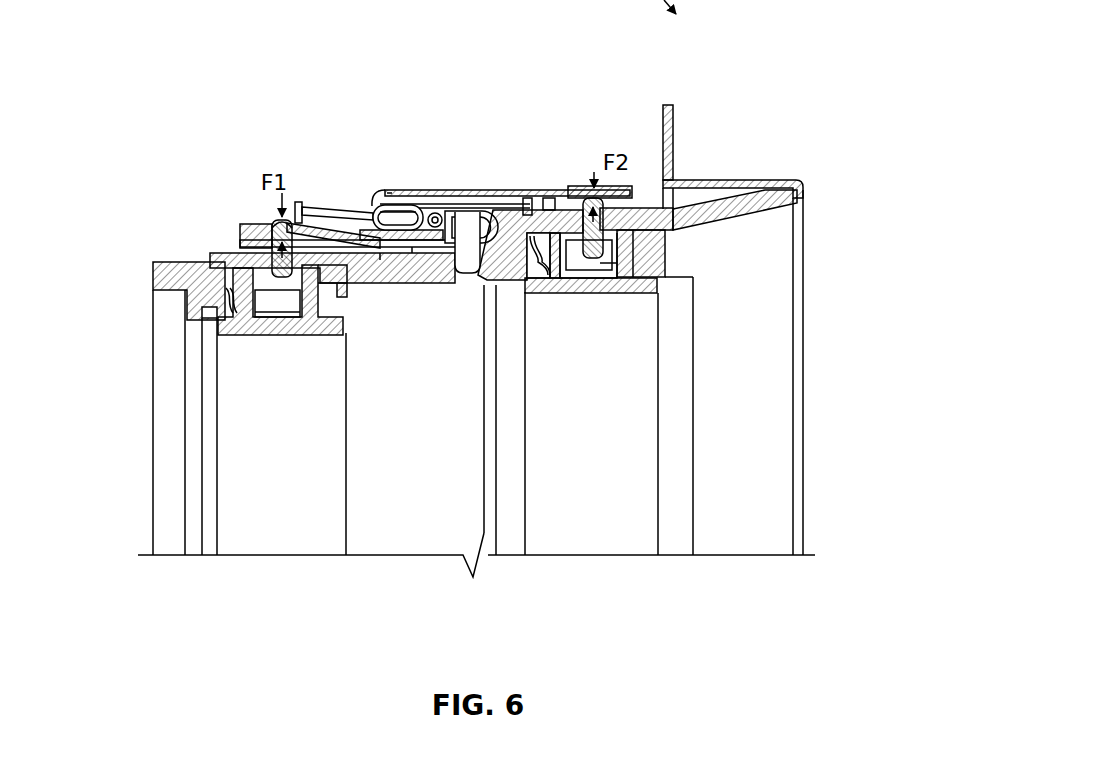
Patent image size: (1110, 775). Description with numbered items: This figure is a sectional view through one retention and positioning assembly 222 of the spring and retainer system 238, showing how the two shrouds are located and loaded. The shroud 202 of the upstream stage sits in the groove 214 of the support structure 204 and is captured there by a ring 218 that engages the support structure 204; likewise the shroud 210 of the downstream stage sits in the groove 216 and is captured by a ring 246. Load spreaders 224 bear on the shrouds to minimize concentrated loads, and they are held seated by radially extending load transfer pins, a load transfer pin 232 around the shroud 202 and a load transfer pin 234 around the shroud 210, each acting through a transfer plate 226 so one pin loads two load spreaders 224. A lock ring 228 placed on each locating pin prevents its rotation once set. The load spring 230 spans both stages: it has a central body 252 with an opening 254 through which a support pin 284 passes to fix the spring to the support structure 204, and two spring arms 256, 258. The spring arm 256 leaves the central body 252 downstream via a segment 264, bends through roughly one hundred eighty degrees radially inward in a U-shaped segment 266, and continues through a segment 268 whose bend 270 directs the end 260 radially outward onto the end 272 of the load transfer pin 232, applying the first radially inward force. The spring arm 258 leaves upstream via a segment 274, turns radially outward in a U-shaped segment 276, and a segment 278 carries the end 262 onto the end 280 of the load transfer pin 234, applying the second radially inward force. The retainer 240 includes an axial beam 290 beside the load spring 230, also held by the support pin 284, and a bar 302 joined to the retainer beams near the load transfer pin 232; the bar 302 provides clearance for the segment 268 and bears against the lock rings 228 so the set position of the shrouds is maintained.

The shroud 202 is at (265, 437).
The support structure 204 is at (705, 184).
The shroud 210 is at (600, 437).
The groove 214 is at (212, 256).
The groove 216 is at (558, 292).
The ring 218 is at (156, 282).
The retention and positioning assembly 222 is at (670, 150).
The load spreader 224 is at (283, 306).
The transfer plate 226 is at (212, 312).
The lock ring 228 is at (243, 234).
The load spring 230 is at (520, 199).
The load transfer pin 232 is at (243, 241).
The load transfer pin 234 is at (604, 189).
The spring and retainer system 238 is at (400, 211).
The retainer 240 is at (305, 221).
The ring 246 is at (667, 247).
The central body 252 is at (486, 186).
The opening 254 is at (458, 211).
The spring arm 256 is at (312, 318).
The spring arm 258 is at (437, 213).
The end 260 is at (292, 223).
The end 262 is at (641, 210).
The segment 264 is at (467, 250).
The segment 266 is at (540, 262).
The segment 268 is at (385, 252).
The bend 270 is at (345, 333).
The end 272 is at (280, 224).
The segment 274 is at (415, 250).
The segment 276 is at (386, 186).
The segment 278 is at (560, 228).
The end 280 is at (660, 290).
The support pin 284 is at (440, 228).
The beam 290 is at (372, 205).
The bar 302 is at (300, 215).